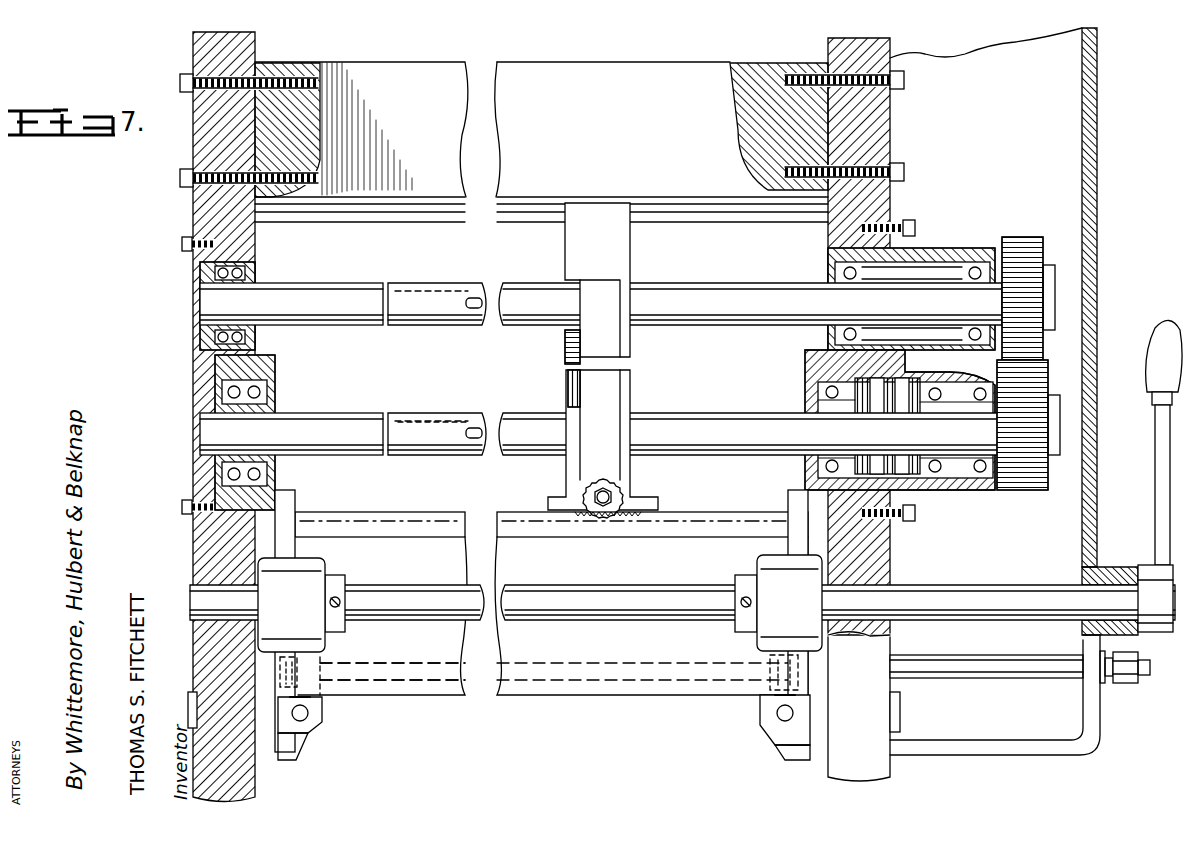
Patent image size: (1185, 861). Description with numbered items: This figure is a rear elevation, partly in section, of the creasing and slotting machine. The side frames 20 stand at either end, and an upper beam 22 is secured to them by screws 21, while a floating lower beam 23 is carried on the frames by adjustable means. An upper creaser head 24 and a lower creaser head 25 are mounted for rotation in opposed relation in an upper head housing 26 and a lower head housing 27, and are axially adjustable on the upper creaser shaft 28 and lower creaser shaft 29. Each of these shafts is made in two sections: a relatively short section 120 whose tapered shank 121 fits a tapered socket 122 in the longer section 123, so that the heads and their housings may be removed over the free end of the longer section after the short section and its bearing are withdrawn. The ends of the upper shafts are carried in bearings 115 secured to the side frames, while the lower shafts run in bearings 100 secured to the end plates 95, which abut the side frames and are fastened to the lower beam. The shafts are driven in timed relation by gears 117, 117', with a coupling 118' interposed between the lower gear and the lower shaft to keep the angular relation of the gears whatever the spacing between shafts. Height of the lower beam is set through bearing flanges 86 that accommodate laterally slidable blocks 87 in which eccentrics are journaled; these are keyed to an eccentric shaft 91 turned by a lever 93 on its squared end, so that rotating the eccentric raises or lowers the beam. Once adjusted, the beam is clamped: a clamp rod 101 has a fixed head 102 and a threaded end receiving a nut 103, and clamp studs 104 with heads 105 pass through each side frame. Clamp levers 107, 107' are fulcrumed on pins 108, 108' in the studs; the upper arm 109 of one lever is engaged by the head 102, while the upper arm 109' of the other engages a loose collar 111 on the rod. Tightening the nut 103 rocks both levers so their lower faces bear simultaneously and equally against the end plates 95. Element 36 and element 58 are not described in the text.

The side frame 20 is at (190, 207).
The screw 21 is at (272, 79).
The upper beam 22 is at (540, 73).
The floating lower beam 23 is at (546, 692).
The upper creaser head 24 is at (566, 338).
The lower creaser head 25 is at (568, 383).
The upper head housing 26 is at (612, 270).
The lower head housing 27 is at (610, 397).
The upper creaser shaft 28 is at (706, 289).
The lower creaser shaft 29 is at (708, 416).
The guide rail 36 is at (762, 210).
The rack rail 58 is at (298, 516).
The bearing flange 86 is at (798, 645).
The laterally slidable block 87 is at (318, 582).
The eccentric shaft 91 is at (565, 590).
The lever 93 is at (1158, 519).
The end plate 95 is at (286, 500).
The bearing 100 is at (276, 398).
The clamp rod 101 is at (388, 682).
The fixed head 102 is at (322, 662).
The nut 103 is at (1124, 688).
The clamp stud 104 is at (312, 726).
The head 105 is at (190, 694).
The clamp lever 107 is at (299, 759).
The clamp lever 107' is at (790, 765).
The pin 108 is at (328, 717).
The pin 108' is at (741, 719).
The upper arm 109 is at (332, 712).
The upper arm 109' is at (738, 712).
The loose collar 111 is at (958, 680).
The bearing 115 is at (256, 277).
The gear 117 is at (1028, 445).
The gear 117' is at (1028, 271).
The coupling 118' is at (916, 454).
The short shaft section 120 is at (360, 290).
The tapered shank 121 is at (416, 408).
The tapered socket 122 is at (427, 446).
The long shaft section 123 is at (440, 290).